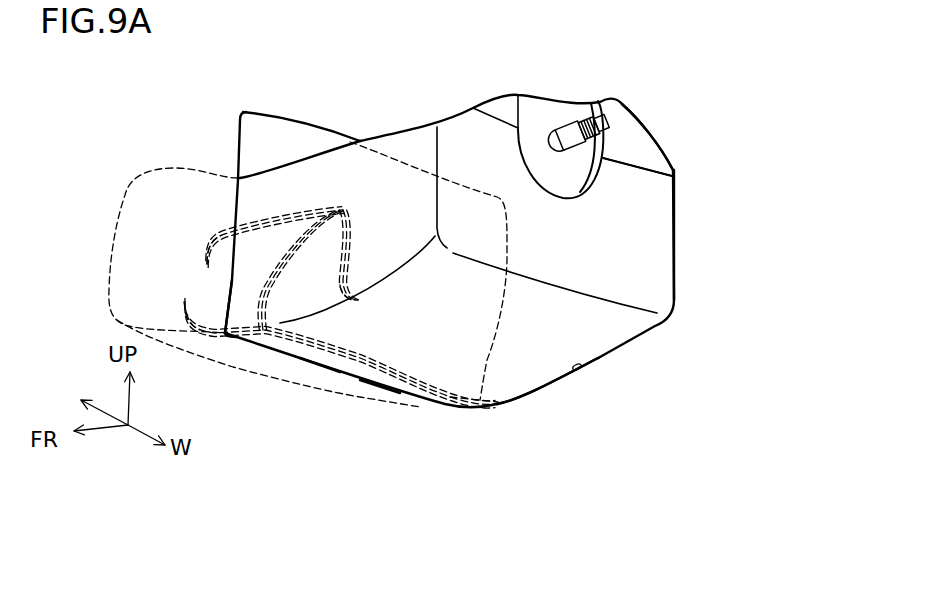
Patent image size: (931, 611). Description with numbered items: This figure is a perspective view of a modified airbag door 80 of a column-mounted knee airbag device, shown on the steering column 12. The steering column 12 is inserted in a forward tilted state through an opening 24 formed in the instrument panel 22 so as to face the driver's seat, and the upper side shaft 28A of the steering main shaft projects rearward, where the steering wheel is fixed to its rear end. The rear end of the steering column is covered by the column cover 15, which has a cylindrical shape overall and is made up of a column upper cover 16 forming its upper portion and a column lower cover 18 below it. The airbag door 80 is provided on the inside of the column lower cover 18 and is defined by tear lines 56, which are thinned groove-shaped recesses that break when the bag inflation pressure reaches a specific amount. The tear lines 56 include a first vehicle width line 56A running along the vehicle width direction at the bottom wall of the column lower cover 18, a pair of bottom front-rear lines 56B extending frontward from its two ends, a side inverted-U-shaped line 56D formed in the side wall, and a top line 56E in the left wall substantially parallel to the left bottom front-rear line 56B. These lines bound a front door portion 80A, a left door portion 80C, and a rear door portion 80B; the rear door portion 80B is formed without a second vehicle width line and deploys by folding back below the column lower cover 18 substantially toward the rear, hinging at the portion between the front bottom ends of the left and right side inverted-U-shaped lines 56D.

The steering column 12 is at (641, 88).
The column cover 15 is at (731, 86).
The column upper cover 16 is at (637, 147).
The column lower cover 18 is at (643, 217).
The instrument panel 22 is at (283, 117).
The opening 24 is at (296, 142).
The upper side shaft 28A is at (562, 133).
The tear lines 56 is at (412, 364).
The first vehicle width line 56A is at (450, 407).
The bottom front-rear lines 56B is at (235, 337).
The side inverted-U-shaped line 56D is at (346, 250).
The top line 56E is at (318, 199).
The airbag door 80 is at (539, 396).
The front door portion 80A is at (320, 356).
The rear door portion 80B is at (377, 337).
The left door portion 80C is at (244, 302).